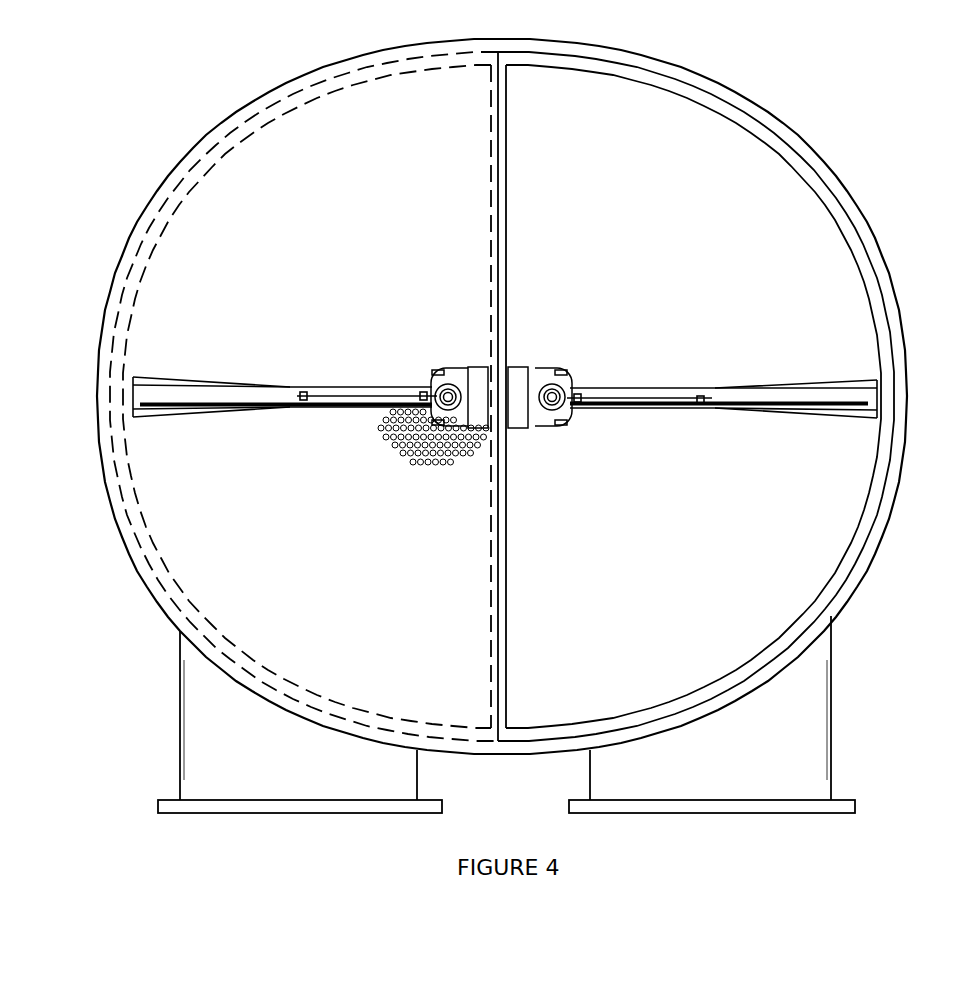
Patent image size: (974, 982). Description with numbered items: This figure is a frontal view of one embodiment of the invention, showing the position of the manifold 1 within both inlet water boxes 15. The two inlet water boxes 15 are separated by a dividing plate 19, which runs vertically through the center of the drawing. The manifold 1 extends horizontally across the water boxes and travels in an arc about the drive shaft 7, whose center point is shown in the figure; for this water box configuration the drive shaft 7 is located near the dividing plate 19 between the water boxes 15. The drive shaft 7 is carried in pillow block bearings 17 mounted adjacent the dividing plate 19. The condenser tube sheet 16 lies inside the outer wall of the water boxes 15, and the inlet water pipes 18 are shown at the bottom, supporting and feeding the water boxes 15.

The manifold 1 is at (670, 408).
The drive shaft 7 is at (552, 417).
The inlet water boxes 15 is at (902, 322).
The condenser tube sheet 16 is at (820, 233).
The pillow block bearings 17 is at (480, 372).
The inlet water pipes 18 is at (805, 757).
The dividing plate 19 is at (507, 590).